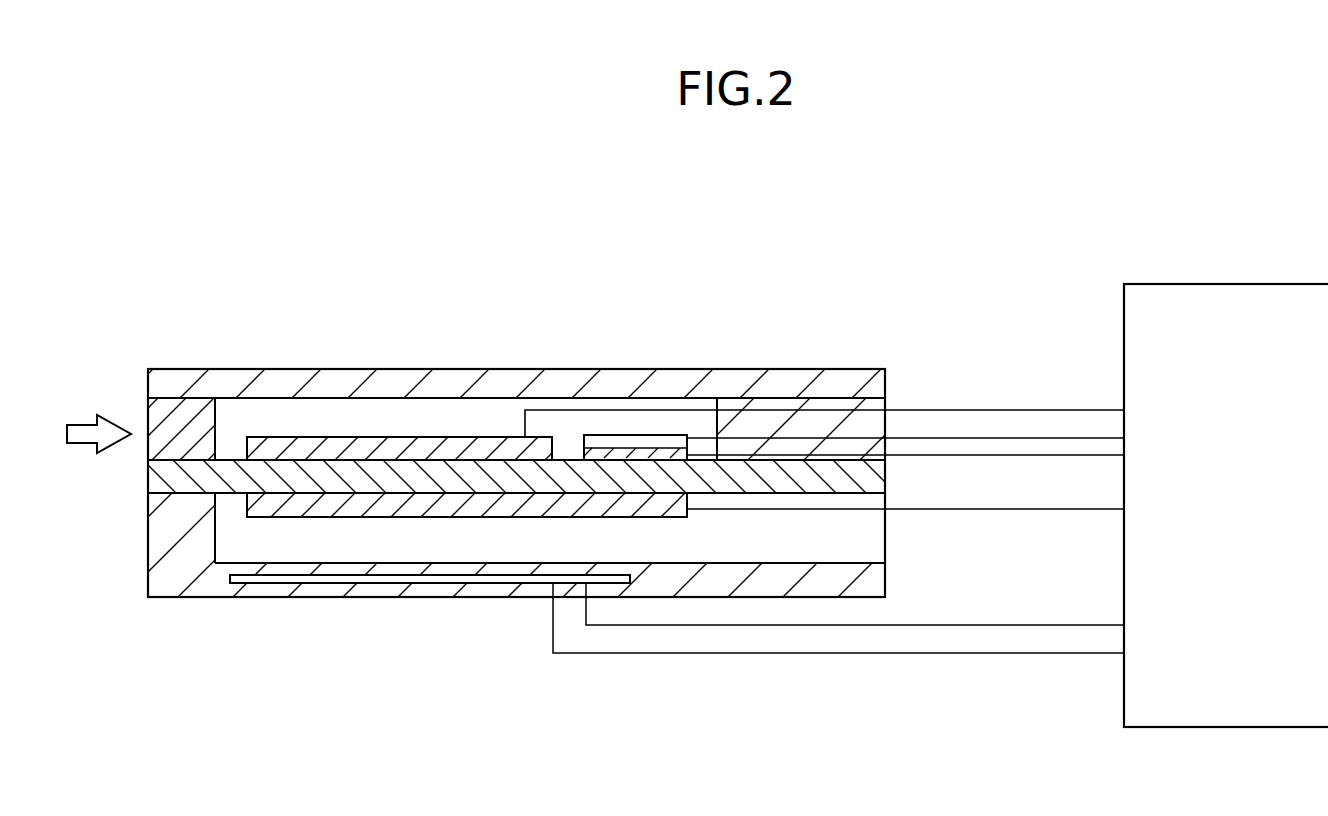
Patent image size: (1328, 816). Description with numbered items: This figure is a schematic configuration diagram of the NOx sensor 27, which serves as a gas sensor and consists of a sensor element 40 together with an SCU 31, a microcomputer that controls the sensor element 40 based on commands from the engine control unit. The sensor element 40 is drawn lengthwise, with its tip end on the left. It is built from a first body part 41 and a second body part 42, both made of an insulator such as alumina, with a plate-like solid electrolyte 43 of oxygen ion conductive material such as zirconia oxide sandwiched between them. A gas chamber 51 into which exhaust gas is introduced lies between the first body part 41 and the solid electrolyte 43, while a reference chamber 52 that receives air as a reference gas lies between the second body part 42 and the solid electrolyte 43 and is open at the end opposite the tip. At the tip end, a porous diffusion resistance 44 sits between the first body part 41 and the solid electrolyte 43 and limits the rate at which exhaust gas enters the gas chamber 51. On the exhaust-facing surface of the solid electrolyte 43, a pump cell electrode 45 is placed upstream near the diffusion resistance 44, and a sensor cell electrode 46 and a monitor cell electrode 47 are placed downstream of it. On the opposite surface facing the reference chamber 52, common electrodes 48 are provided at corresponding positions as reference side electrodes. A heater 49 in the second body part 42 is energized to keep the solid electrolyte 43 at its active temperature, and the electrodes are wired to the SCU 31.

The sensor element 40 is at (201, 234).
The NOx sensor 27 is at (1245, 173).
The SCU (Sensor Control Unit) 31 is at (1281, 284).
The first body part 41 is at (276, 369).
The second body part 42 is at (207, 598).
The solid electrolyte 43 is at (792, 460).
The diffusion resistance 44 is at (179, 398).
The pump cell electrode 45 is at (333, 461).
The sensor cell electrode 46 is at (607, 456).
The monitor cell electrode 47 is at (637, 437).
The common electrode 48 is at (399, 509).
The heater 49 is at (489, 584).
The gas chamber 51 is at (358, 410).
The reference chamber 52 is at (800, 545).